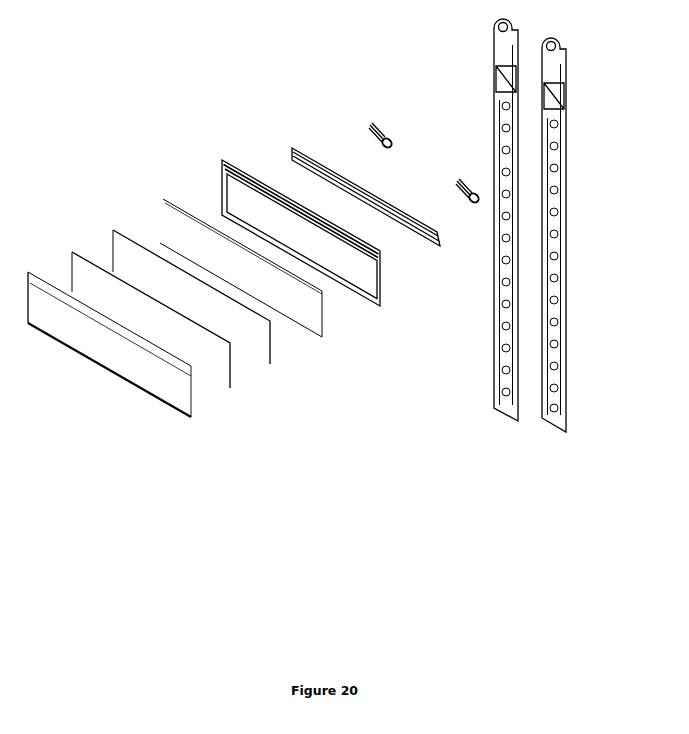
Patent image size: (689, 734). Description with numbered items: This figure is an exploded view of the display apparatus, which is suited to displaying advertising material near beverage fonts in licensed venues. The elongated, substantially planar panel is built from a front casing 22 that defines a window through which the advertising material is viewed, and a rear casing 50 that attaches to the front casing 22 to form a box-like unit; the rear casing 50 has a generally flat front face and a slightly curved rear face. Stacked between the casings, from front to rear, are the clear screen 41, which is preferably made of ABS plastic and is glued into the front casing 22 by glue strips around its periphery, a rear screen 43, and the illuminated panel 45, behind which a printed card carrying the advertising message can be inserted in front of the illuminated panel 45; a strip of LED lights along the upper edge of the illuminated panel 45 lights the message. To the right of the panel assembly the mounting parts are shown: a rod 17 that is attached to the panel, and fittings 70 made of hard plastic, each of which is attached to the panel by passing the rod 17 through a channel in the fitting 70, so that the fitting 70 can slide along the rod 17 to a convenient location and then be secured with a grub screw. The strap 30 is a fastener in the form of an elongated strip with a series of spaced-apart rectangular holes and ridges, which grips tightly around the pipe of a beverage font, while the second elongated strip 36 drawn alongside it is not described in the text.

The front casing 22 is at (186, 402).
The screen 41 is at (231, 367).
The rear screen 43 is at (271, 343).
The illuminated panel 45 is at (323, 323).
The rear casing 50 is at (382, 301).
The rod 17 is at (441, 238).
The fitting 70 is at (373, 125).
The strap 30 is at (495, 402).
The right rail 36 is at (564, 433).